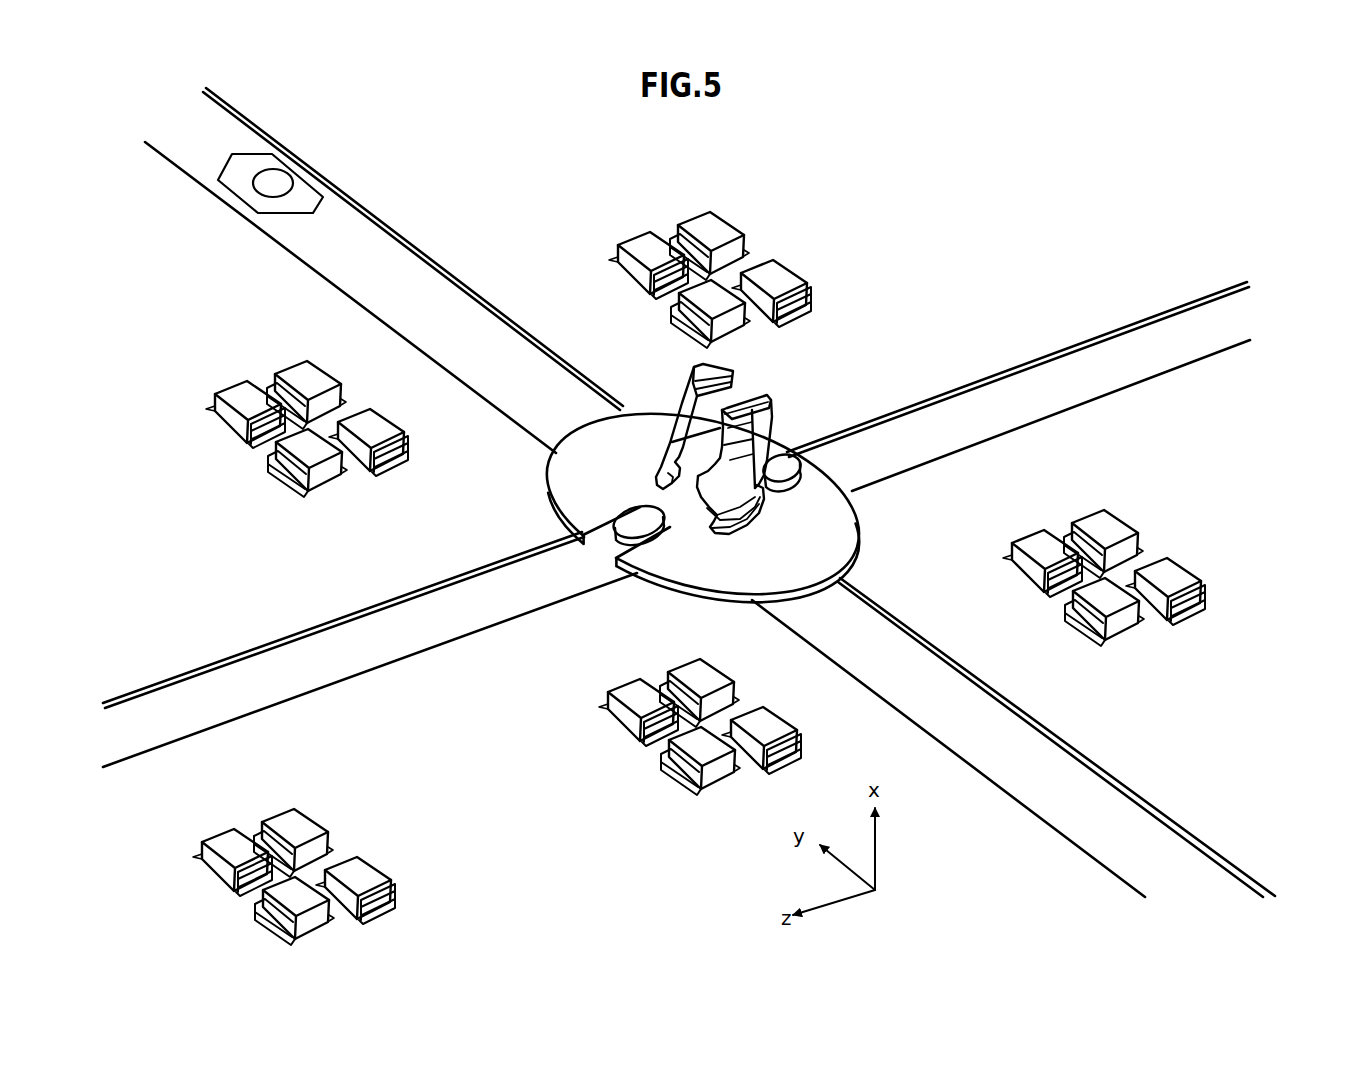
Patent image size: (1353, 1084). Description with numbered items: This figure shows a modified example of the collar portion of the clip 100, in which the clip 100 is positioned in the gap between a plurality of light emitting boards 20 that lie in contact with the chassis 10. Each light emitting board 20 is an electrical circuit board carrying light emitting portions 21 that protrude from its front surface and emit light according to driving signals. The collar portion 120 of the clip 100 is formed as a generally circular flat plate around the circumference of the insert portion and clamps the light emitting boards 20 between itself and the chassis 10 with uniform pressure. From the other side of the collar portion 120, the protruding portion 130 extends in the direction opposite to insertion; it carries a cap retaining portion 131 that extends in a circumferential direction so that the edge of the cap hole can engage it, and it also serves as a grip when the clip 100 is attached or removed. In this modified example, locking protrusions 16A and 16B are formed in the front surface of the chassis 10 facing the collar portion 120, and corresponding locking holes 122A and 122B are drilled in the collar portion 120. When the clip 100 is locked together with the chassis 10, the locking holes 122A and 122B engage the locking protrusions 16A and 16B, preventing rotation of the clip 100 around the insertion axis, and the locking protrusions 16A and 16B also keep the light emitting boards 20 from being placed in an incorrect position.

The chassis 10 is at (418, 272).
The light emitting board 20 is at (147, 321).
The light emitting portion 21 is at (783, 277).
The clip 100 is at (734, 486).
The collar portion 120 is at (740, 521).
The locking hole 122A is at (822, 470).
The locking hole 122B is at (643, 547).
The protruding portion 130 is at (690, 370).
The cap retaining portion 131 is at (760, 540).
The locking protrusion 16A is at (801, 463).
The locking protrusion 16B is at (640, 528).